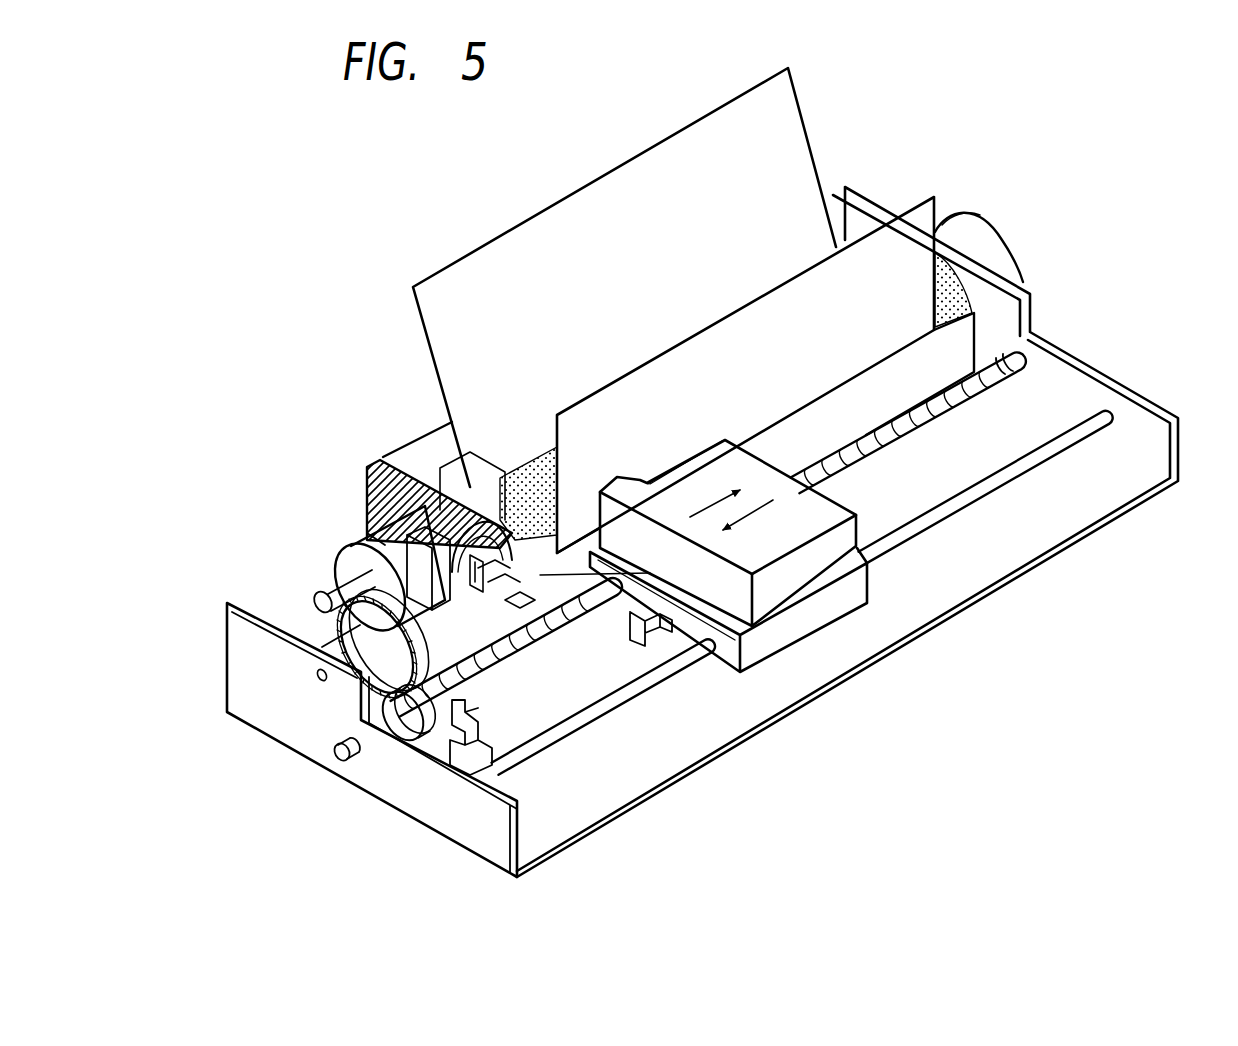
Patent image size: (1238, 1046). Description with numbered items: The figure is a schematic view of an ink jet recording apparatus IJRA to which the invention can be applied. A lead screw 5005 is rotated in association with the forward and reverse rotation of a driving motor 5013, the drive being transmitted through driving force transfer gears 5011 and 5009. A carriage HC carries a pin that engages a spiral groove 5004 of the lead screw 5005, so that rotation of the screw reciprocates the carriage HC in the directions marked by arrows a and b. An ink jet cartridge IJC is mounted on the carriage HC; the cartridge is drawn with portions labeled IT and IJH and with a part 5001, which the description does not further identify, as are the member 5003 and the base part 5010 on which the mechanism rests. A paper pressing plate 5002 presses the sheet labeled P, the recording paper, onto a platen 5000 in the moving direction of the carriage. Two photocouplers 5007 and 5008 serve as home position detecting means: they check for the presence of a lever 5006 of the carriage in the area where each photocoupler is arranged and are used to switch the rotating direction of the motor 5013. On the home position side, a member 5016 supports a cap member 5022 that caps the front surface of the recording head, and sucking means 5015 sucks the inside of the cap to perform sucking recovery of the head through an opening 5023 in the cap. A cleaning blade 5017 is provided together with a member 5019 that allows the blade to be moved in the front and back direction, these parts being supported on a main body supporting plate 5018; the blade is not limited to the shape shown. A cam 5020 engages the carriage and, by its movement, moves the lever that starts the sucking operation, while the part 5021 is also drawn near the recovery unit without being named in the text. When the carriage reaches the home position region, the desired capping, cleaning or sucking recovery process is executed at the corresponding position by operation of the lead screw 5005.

The recording paper P is at (793, 114).
The ink jet recording apparatus IJRA is at (980, 170).
The platen 5000 is at (960, 290).
The paper pressing plate 5002 is at (870, 385).
The recording head cartridge 5001 is at (695, 462).
The ink tank IT is at (758, 452).
The ink jet head IJH is at (626, 480).
The ink jet cartridge IJC is at (847, 497).
The carriage HC is at (868, 583).
The cap member 5022 is at (650, 573).
The lever 5006 is at (665, 642).
The spiral groove 5004 is at (605, 598).
The lead screw 5005 is at (512, 645).
The guide rail 5003 is at (561, 733).
The photocoupler 5008 is at (450, 762).
The photocoupler 5007 is at (425, 716).
The driving force transfer gear 5009 is at (352, 742).
The chassis base plate 5010 is at (227, 712).
The driving force transfer gear 5011 is at (340, 632).
The driving motor 5013 is at (365, 533).
The main body supporting plate 5018 is at (383, 457).
The member for enabling the cleaning blade to be moved 5019 is at (372, 490).
The sucking means 5015 is at (427, 453).
The member to support the cap member 5016 is at (458, 487).
The cleaning blade 5017 is at (503, 480).
The cam 5020 is at (510, 596).
The suction start lever 5021 is at (520, 585).
The opening 5023 is at (505, 572).